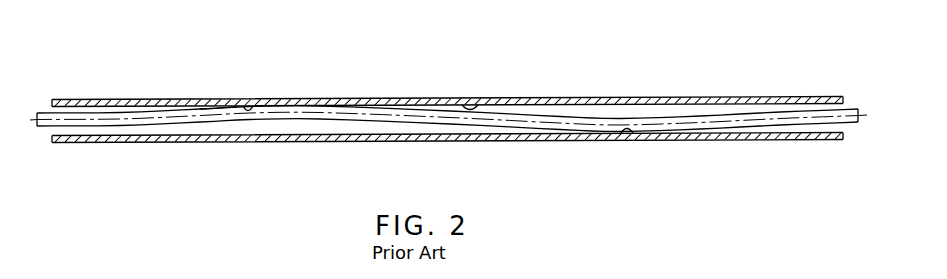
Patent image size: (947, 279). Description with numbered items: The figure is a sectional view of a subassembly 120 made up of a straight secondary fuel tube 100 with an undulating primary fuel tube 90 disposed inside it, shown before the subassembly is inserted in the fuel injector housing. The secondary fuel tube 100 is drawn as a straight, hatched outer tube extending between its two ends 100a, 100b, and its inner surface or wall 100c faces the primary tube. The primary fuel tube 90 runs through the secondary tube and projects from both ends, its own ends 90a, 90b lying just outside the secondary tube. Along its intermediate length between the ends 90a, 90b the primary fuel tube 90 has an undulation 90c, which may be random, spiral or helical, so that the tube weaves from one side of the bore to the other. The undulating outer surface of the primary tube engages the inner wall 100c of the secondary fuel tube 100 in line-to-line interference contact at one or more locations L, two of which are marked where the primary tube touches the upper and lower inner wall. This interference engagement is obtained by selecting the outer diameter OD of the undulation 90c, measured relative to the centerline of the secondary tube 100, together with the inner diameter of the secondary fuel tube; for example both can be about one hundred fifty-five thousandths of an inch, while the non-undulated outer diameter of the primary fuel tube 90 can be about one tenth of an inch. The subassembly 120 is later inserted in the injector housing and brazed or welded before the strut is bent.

The secondary fuel tube 100 is at (685, 138).
The end of secondary fuel tube 100a is at (74, 100).
The end of secondary fuel tube 100b is at (833, 97).
The inner surface or wall of secondary fuel tube 100c is at (482, 100).
The primary fuel tube 90 is at (367, 112).
The end of primary fuel tube 90a is at (85, 124).
The end of primary fuel tube 90b is at (857, 120).
The undulation 90c is at (218, 107).
The outer diameter of undulation OD is at (625, 130).
The location of line-to-line interference contact L is at (645, 136).
The subassembly 120 is at (332, 174).